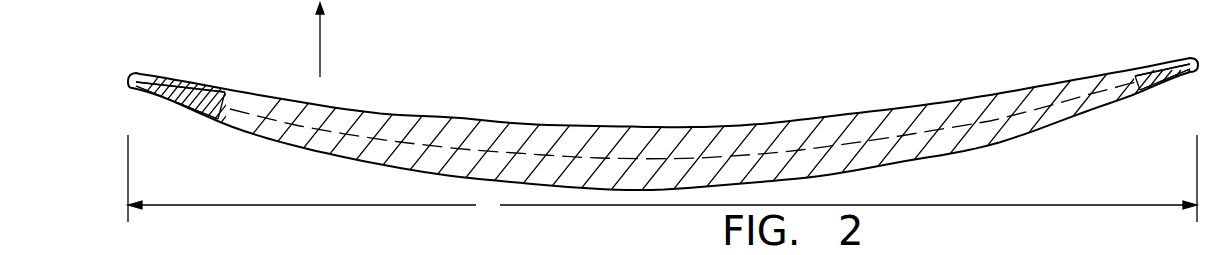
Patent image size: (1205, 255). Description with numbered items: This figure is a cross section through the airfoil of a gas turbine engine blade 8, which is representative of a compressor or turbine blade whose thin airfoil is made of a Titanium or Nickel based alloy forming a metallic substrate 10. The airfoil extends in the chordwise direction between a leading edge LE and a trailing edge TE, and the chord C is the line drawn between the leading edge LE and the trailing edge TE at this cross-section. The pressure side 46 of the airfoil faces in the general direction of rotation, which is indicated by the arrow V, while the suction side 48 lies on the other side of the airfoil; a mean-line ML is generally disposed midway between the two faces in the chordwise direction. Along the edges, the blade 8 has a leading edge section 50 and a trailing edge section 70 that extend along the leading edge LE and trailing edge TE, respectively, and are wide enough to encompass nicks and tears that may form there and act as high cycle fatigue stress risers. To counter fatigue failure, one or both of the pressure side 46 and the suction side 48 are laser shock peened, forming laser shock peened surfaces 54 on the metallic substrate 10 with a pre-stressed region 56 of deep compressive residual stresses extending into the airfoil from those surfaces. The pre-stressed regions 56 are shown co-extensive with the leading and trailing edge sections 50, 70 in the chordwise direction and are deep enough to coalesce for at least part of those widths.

The gas turbine engine blade 8 is at (667, 112).
The metallic substrate 10 is at (341, 109).
The pressure side 46 is at (368, 108).
The suction side 48 is at (302, 149).
The leading edge section 50 is at (130, 86).
The laser shock peened surface 54 is at (151, 72).
The pre-stressed region 56 is at (194, 80).
The trailing edge section 70 is at (1189, 77).
The leading edge LE is at (130, 77).
The trailing edge TE is at (1199, 58).
The mean-line ML is at (853, 140).
The arrow indicating direction of rotation V is at (320, 52).
The chord C is at (662, 178).